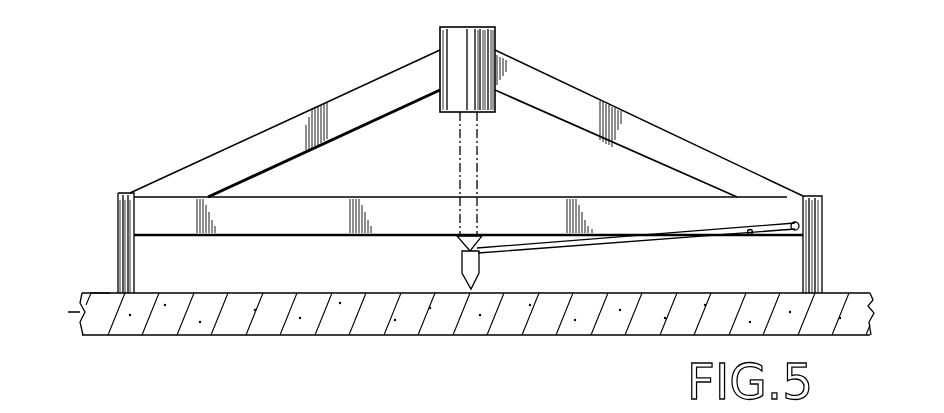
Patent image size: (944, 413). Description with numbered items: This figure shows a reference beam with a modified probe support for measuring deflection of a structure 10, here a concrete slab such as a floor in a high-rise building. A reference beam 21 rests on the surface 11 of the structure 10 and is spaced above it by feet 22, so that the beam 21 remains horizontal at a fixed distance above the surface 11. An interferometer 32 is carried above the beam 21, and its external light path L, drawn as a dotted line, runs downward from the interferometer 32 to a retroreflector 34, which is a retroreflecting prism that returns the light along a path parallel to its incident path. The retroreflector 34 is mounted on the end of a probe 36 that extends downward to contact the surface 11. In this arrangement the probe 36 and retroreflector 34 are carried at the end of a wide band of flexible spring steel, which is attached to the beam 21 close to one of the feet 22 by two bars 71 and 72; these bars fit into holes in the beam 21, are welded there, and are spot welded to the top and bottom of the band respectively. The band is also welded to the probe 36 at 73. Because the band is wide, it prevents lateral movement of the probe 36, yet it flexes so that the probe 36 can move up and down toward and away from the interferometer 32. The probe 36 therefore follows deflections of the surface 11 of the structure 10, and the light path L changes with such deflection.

The structure to be tested 10 is at (240, 327).
The surface of structure 11 is at (99, 282).
The reference beam 21 is at (740, 207).
The feet 22 is at (815, 260).
The interferometer 32 is at (473, 45).
The retroreflector 34 is at (477, 234).
The probe 36 is at (473, 265).
The bar 71 is at (800, 225).
The bar 72 is at (752, 229).
The weld of band to probe 73 is at (462, 248).
The external light path L is at (481, 164).